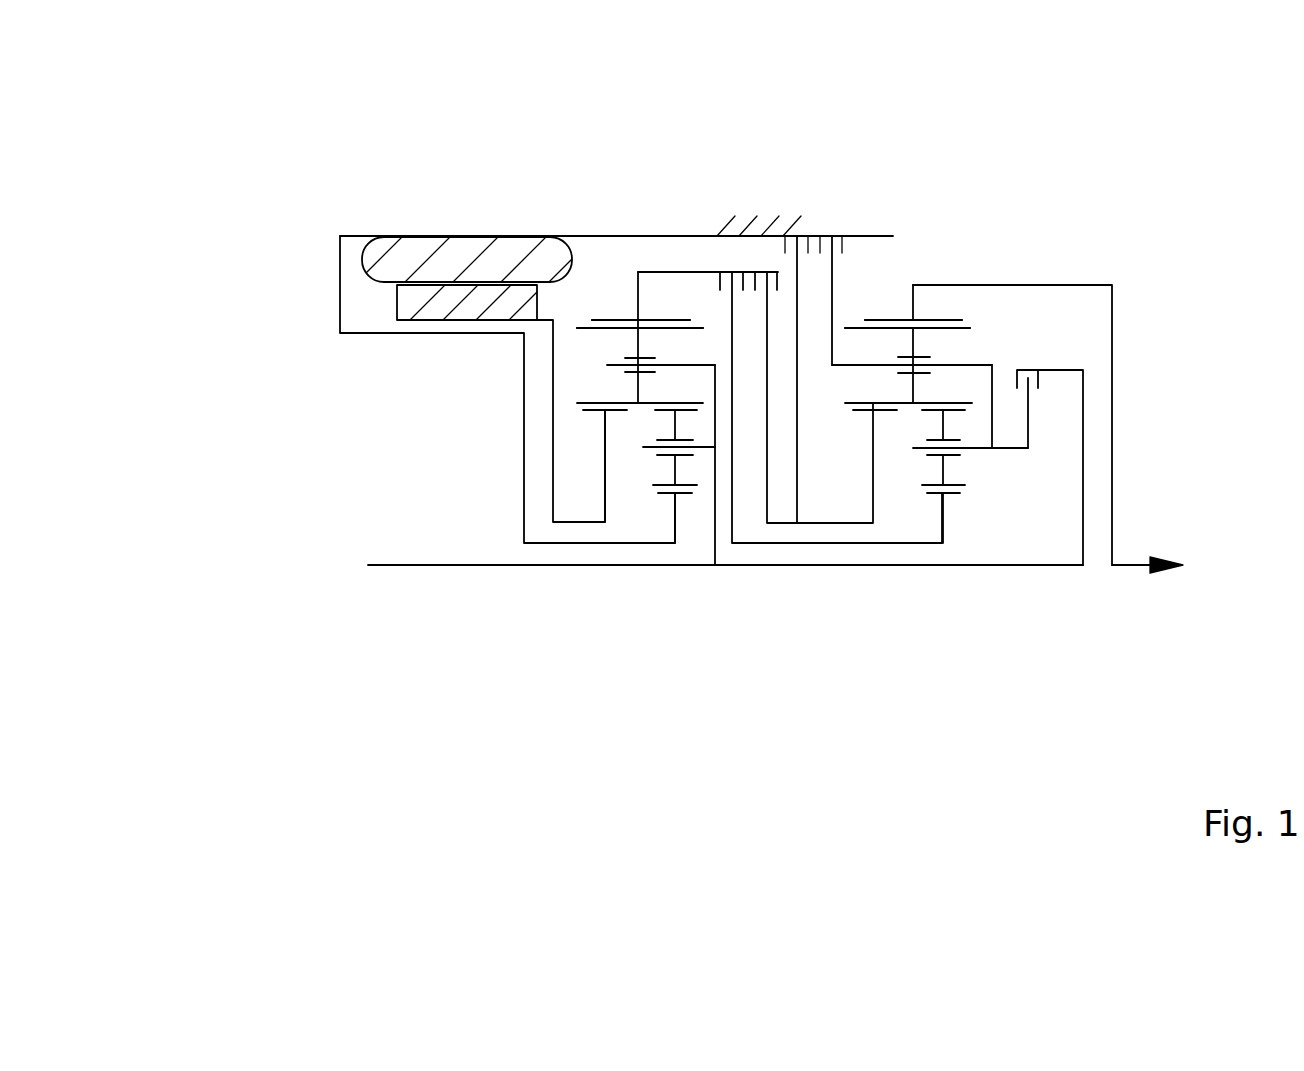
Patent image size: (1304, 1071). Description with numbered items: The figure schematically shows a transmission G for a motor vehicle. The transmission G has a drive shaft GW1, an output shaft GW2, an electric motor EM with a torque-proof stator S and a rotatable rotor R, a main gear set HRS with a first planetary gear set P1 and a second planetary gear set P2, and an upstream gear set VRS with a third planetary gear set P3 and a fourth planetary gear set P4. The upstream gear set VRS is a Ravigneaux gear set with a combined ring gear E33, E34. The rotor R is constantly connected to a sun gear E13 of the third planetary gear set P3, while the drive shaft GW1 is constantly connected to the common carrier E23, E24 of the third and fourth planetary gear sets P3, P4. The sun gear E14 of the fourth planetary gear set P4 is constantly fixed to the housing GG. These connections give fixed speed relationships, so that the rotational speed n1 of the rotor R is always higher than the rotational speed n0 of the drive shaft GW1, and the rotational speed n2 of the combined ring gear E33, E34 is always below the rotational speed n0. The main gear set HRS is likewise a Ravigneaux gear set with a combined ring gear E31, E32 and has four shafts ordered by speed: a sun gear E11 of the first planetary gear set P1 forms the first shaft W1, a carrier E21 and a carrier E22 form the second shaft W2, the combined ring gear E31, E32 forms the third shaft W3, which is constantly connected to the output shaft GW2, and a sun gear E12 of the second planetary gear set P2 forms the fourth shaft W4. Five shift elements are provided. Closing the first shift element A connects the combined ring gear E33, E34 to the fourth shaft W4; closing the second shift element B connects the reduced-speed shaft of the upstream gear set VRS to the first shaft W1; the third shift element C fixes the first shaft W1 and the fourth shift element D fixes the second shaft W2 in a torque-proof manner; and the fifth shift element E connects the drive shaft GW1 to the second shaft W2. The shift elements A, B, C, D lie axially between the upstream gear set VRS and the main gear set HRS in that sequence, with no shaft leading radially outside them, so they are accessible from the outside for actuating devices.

The transmission G is at (335, 430).
The housing GG is at (333, 260).
The electric motor EM is at (340, 75).
The rotor R is at (437, 298).
The stator S is at (466, 270).
The combined ring gear E33 is at (611, 313).
The combined ring gear E34 is at (613, 205).
The common carrier E23 is at (686, 360).
The first shift element A is at (722, 262).
The second shift element B is at (762, 255).
The third shift element C is at (797, 234).
The fourth shift element D is at (834, 232).
The carrier E21 is at (850, 358).
The combined ring gear E31 is at (945, 316).
The combined ring gear E32 is at (957, 205).
The second shaft W2 is at (978, 362).
The third shaft W3 is at (1087, 283).
The drive shaft GW1 is at (392, 568).
The sun gear E13 is at (596, 415).
The sun gear E14 is at (657, 505).
The upstream gear set VRS is at (591, 416).
The common carrier E24 is at (718, 410).
The fourth shaft W4 is at (803, 545).
The first shaft W1 is at (823, 525).
The main gear set HRS is at (1013, 416).
The sun gear E11 is at (885, 420).
The sun gear E12 is at (955, 497).
The carrier E22 is at (1000, 412).
The output shaft GW2 is at (1112, 567).
The first planetary gear set P1 is at (873, 585).
The second planetary gear set P2 is at (942, 635).
The third planetary gear set P3 is at (605, 585).
The fourth planetary gear set P4 is at (675, 635).
The fifth shift element E is at (1048, 383).
The rotational speed of the drive shaft n0 is at (480, 565).
The rotational speed of the rotor n1 is at (605, 500).
The rotational speed of the combined ring gear n2 is at (687, 272).